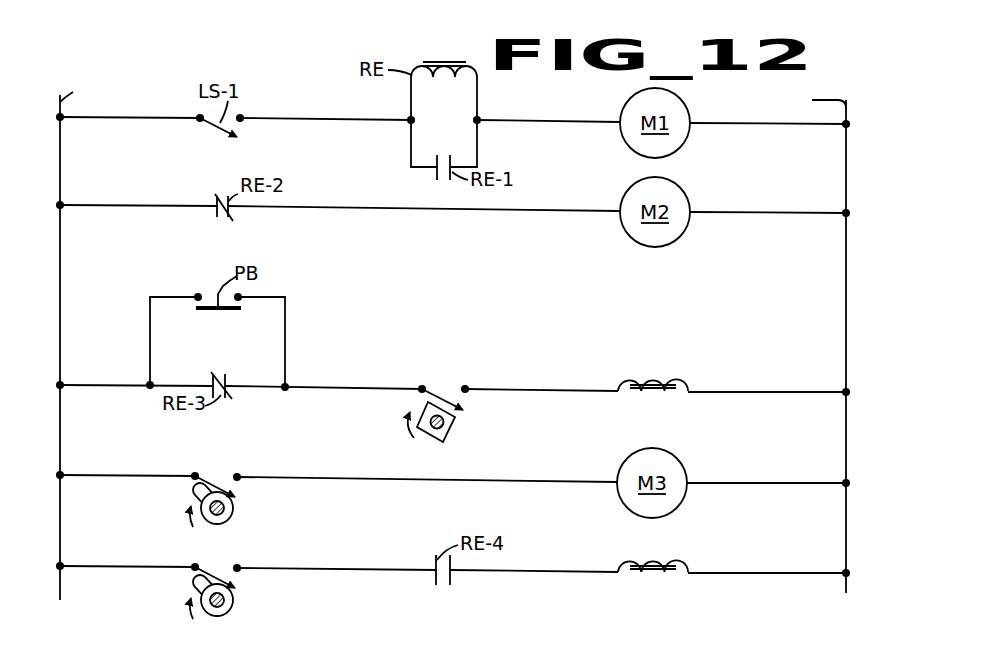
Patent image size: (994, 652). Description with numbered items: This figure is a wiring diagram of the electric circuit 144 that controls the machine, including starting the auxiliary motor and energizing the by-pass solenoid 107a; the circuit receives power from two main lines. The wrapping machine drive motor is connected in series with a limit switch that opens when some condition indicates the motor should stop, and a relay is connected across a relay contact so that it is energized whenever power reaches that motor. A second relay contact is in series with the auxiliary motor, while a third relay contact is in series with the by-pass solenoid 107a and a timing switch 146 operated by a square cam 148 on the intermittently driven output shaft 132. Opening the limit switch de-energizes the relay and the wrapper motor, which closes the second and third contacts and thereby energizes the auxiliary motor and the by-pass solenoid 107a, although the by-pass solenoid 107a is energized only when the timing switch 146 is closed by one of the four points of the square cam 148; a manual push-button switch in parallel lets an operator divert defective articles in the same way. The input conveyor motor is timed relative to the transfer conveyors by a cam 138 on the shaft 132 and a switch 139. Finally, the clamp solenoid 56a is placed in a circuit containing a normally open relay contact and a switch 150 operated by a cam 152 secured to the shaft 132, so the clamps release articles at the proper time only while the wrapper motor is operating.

The electric circuit 144 is at (294, 72).
The timing switch 146 is at (432, 392).
The square cam 148 is at (445, 437).
The intermittently driven output shaft 132 is at (447, 422).
The switch 139 is at (205, 480).
The cam 138 is at (232, 507).
The switch 150 is at (216, 555).
The cam 152 is at (232, 601).
The by-pass solenoid 107a is at (682, 380).
The solenoid 56a is at (682, 562).